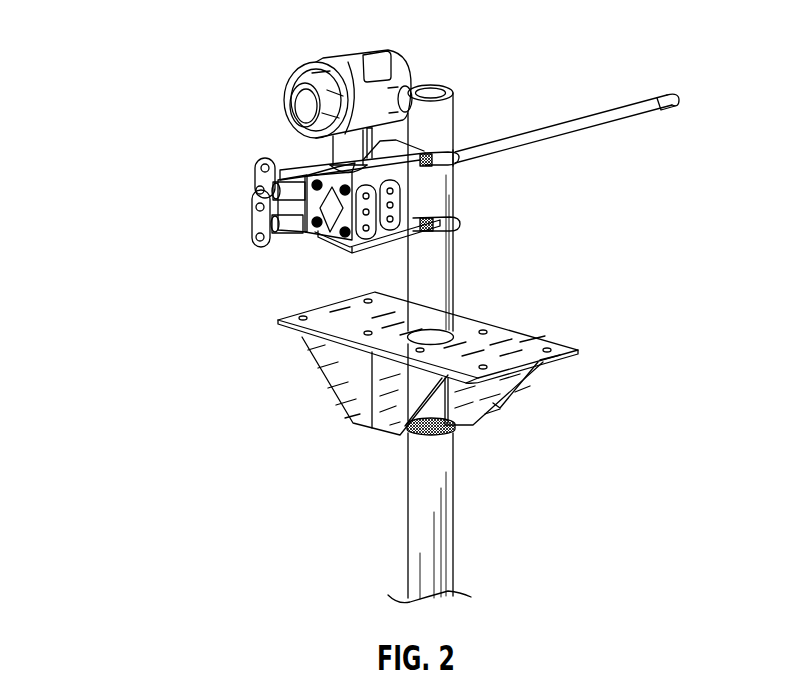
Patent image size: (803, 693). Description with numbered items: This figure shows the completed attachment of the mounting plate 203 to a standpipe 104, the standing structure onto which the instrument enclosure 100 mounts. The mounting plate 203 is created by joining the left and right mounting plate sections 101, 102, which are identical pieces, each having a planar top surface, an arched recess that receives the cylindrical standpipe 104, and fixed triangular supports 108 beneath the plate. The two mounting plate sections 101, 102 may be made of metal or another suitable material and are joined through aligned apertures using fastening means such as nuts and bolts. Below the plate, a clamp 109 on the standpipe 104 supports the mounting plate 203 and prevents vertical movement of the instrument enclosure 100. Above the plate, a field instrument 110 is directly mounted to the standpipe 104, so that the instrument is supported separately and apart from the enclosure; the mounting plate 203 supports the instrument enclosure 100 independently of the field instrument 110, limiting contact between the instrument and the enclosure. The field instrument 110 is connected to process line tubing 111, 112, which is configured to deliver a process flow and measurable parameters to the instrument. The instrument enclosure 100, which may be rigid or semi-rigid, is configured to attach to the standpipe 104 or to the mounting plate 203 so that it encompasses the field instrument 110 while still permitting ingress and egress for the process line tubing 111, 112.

The instrument enclosure 100 is at (118, 43).
The field instrument 110 is at (232, 50).
The process line tubing 111 is at (593, 122).
The process line tubing 112 is at (633, 124).
The mounting plate 203 is at (652, 275).
The left mounting plate section 101 is at (507, 332).
The right mounting plate section 102 is at (318, 313).
The fixed triangular supports 108 is at (391, 421).
The clamp 109 is at (445, 434).
The standpipe 104 is at (437, 535).